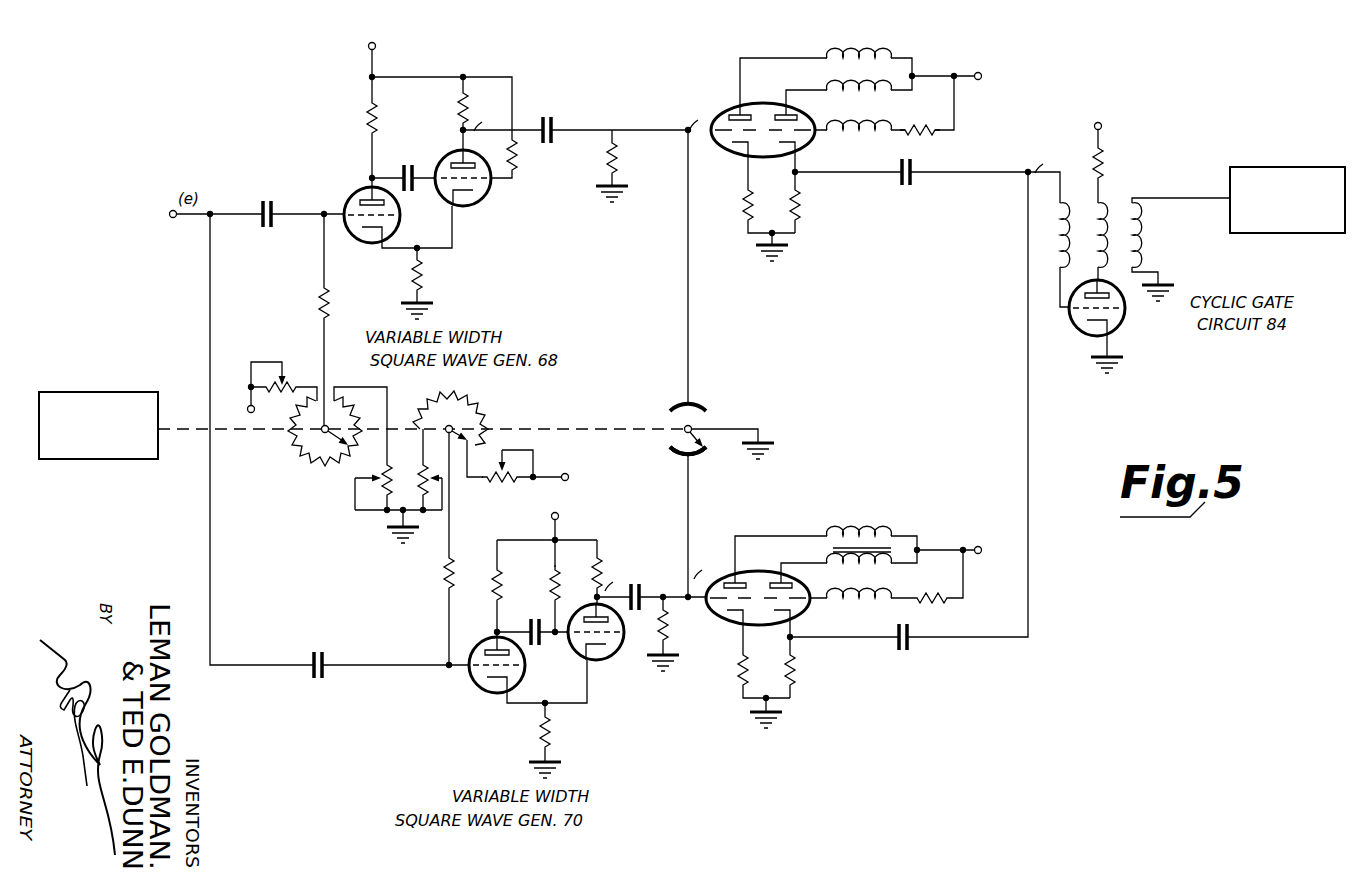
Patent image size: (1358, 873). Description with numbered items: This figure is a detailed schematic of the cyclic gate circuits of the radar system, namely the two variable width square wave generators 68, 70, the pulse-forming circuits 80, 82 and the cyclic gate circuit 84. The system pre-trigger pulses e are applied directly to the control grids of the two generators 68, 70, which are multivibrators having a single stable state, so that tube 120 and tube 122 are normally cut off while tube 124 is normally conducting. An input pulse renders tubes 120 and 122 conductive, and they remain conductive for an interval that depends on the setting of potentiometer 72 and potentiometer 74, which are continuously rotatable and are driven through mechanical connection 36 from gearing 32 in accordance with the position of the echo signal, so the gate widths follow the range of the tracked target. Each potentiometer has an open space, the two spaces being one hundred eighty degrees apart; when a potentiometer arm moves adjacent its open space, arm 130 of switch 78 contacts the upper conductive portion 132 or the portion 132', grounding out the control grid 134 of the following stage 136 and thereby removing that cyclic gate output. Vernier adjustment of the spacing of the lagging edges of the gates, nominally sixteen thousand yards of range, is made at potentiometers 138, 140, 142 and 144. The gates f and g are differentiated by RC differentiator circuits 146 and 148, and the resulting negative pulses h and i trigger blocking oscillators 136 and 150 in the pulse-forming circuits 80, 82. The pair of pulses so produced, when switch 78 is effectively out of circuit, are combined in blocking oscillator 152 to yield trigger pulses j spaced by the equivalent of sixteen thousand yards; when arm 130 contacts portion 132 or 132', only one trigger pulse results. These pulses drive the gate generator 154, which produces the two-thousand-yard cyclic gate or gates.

The gearing 32 is at (138, 392).
The mechanical connection 36 is at (197, 429).
The variable width square wave generator 68 is at (430, 226).
The variable width square wave generator 70 is at (577, 646).
The potentiometer 72 is at (330, 402).
The potentiometer 74 is at (466, 402).
The switch 78 is at (700, 364).
The pulse-forming circuit 80 is at (785, 181).
The pulse-forming circuit 82 is at (859, 475).
The cyclic gate circuit 84 is at (1186, 238).
The tube 120 is at (356, 200).
The tube 122 is at (491, 636).
The tube 124 is at (483, 200).
The arm 130 is at (670, 455).
The upper conductive portion 132 is at (713, 397).
The conductive portion 132' is at (707, 469).
The control grid 134 is at (729, 153).
The blocking oscillator 136 is at (780, 214).
The potentiometer 138 is at (285, 383).
The potentiometer 140 is at (363, 512).
The potentiometer 142 is at (429, 494).
The potentiometer 144 is at (506, 490).
The RC differentiator circuit 146 is at (610, 160).
The RC differentiator circuit 148 is at (659, 600).
The blocking oscillator 150 is at (775, 679).
The blocking oscillator 152 is at (1124, 322).
The gate generator 154 is at (1300, 233).